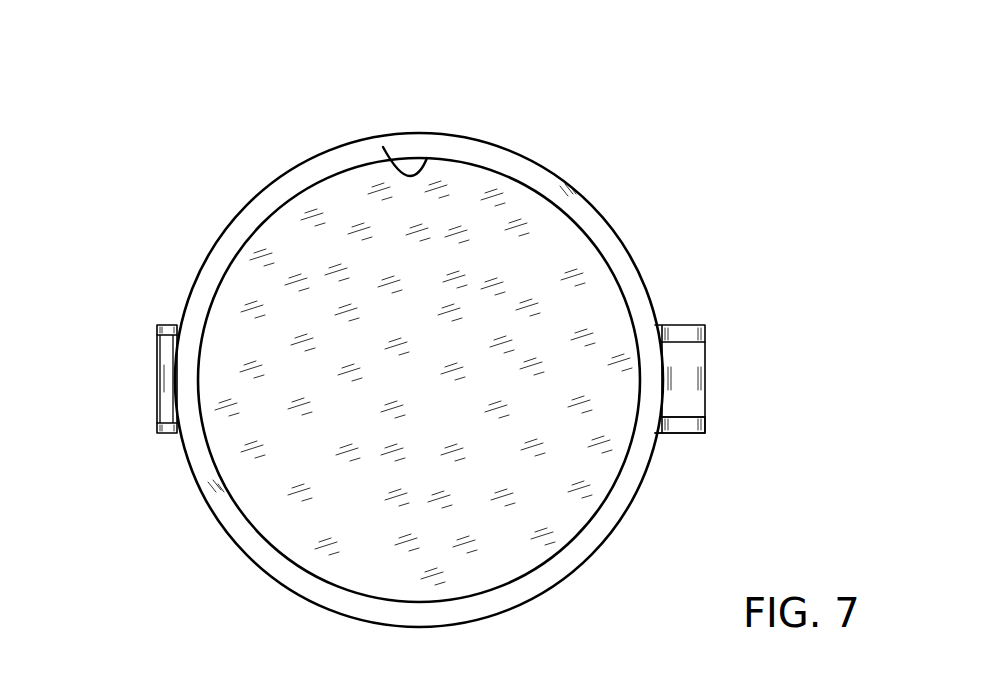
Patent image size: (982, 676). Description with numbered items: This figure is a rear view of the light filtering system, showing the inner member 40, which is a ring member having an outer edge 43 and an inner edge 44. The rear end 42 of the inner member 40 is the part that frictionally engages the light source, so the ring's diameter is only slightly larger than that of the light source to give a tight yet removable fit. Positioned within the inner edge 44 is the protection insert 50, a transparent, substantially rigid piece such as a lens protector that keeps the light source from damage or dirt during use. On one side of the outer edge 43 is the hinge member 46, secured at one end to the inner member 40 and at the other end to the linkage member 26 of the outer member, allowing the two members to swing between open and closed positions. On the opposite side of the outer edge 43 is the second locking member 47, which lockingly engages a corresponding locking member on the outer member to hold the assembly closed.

The inner member 40 is at (542, 164).
The rear end 42 is at (463, 152).
The outer edge 43 is at (287, 177).
The inner edge 44 is at (383, 147).
The second locking member 47 is at (165, 325).
The linkage member 26 is at (693, 353).
The hinge member 46 is at (685, 433).
The protection insert 50 is at (302, 523).